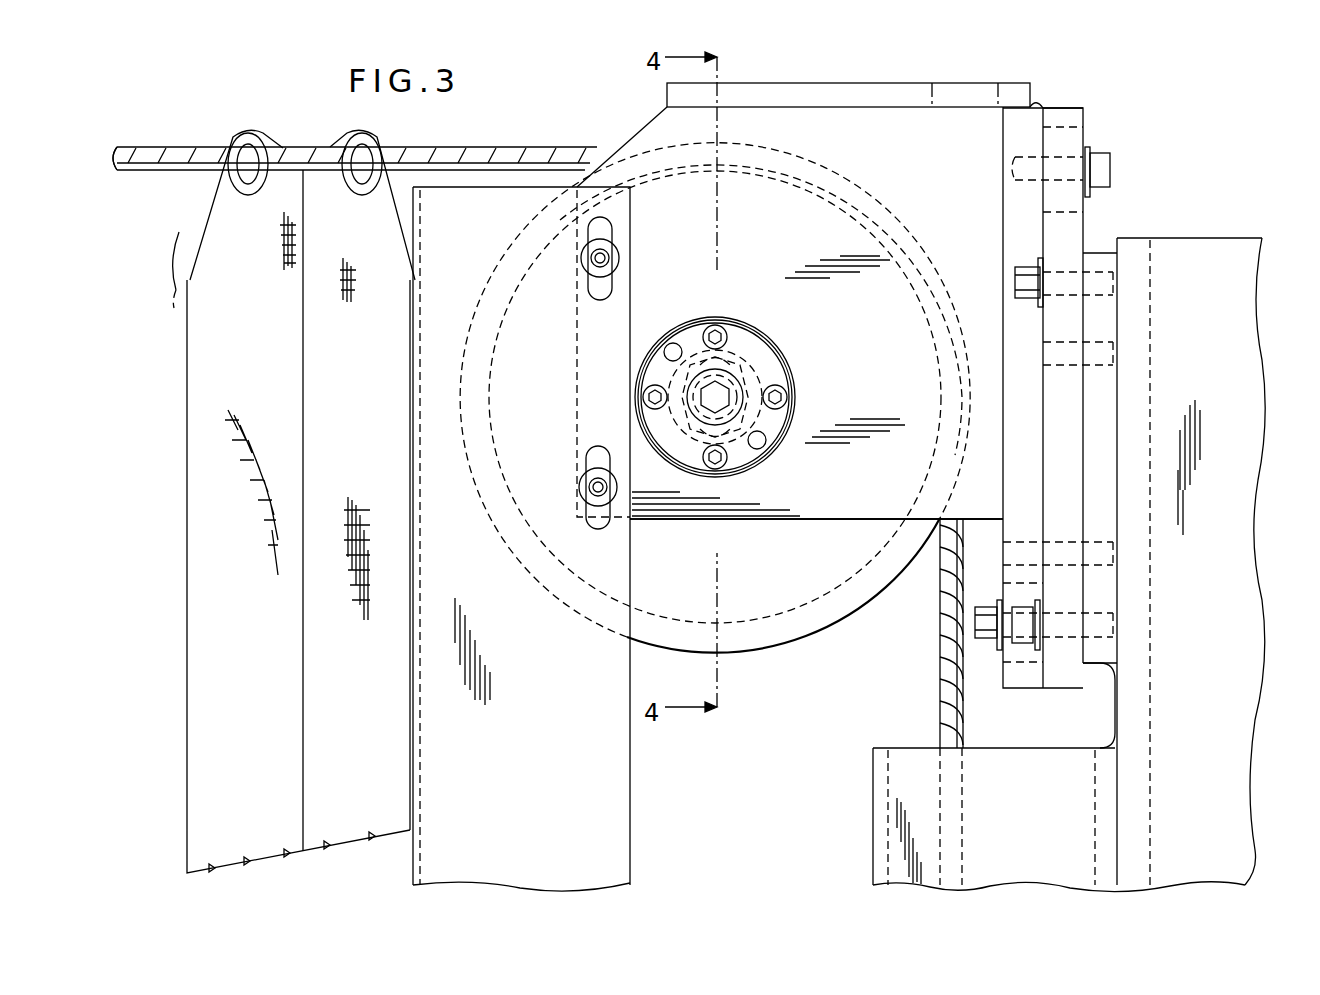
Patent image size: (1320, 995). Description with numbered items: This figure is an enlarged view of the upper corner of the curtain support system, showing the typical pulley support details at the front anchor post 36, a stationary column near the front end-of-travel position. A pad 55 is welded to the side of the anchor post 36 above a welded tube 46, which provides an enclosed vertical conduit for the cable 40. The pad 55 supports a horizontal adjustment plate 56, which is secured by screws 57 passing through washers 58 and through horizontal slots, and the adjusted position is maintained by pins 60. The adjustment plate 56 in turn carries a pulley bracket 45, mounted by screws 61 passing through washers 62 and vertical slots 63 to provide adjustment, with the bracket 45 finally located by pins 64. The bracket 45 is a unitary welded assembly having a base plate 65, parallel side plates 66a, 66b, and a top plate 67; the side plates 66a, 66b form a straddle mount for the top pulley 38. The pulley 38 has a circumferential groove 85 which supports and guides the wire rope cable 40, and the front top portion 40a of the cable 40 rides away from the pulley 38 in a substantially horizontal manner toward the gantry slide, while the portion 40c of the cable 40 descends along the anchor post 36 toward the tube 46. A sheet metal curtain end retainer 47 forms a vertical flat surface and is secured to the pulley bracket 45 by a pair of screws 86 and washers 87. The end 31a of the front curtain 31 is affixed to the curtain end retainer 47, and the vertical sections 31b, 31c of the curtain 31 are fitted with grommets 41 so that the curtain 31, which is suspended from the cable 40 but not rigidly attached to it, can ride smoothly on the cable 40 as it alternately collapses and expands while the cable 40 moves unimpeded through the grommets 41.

The curtain 31 is at (186, 408).
The end of the curtain 31a is at (410, 407).
The vertical section of the curtain 31b is at (391, 342).
The vertical section of the curtain 31c is at (286, 342).
The front anchor post 36 is at (1218, 315).
The top pulley 38 is at (865, 602).
The cable 40 is at (553, 147).
The front top portion of the cable 40a is at (204, 120).
The rod spring section 40c is at (940, 712).
The grommets 41 is at (248, 196).
The pulley bracket 45 is at (1033, 95).
The tube 46 is at (873, 788).
The curtain end retainer 47 is at (530, 709).
The pad 55 is at (1100, 252).
The horizontal adjustment plate 56 is at (1085, 122).
The screws 57 is at (1015, 283).
The washers 58 is at (1038, 263).
The pins 60 is at (1057, 366).
The screws 61 is at (980, 640).
The washers 62 is at (1000, 652).
The vertical slots 63 is at (1046, 664).
The pins 64 is at (1062, 542).
The base plate 65 is at (1003, 142).
The side plate 66a is at (814, 522).
The side plate 66b is at (788, 584).
The top plate 67 is at (875, 108).
The circumferential groove 85 is at (803, 610).
The screws 86 is at (608, 262).
The washers 87 is at (612, 250).